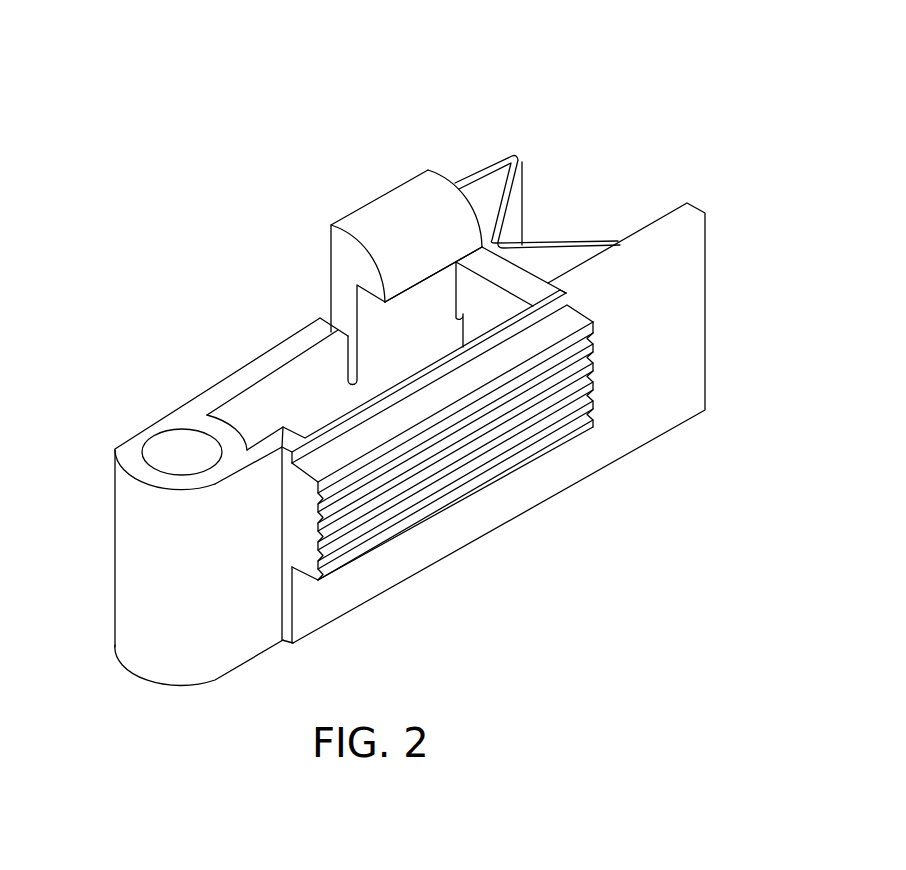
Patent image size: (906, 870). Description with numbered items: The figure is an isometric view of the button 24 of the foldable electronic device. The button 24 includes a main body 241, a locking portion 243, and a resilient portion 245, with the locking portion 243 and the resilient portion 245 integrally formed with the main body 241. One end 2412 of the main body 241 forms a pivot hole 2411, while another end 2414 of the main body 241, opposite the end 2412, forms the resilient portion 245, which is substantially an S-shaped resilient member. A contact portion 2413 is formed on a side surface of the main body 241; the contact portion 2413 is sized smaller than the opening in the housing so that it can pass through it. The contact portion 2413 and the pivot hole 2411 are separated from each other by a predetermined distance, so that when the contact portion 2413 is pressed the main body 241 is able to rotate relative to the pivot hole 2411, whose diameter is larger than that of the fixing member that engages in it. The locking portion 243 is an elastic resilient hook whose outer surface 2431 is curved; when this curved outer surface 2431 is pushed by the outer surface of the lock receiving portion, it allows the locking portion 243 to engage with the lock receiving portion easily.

The button 24 is at (419, 347).
The main body 241 is at (419, 435).
The pivot hole 2411 is at (172, 455).
The end of the main body 2412 is at (160, 505).
The contact portion 2413 is at (598, 358).
The another end of the main body 2414 is at (640, 242).
The locking portion 243 is at (362, 237).
The outer surface of the locking portion 2431 is at (422, 262).
The resilient portion 245 is at (519, 157).